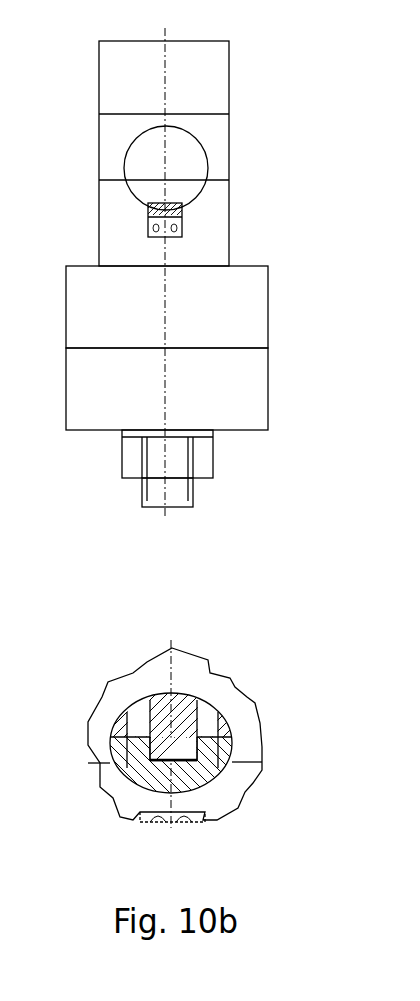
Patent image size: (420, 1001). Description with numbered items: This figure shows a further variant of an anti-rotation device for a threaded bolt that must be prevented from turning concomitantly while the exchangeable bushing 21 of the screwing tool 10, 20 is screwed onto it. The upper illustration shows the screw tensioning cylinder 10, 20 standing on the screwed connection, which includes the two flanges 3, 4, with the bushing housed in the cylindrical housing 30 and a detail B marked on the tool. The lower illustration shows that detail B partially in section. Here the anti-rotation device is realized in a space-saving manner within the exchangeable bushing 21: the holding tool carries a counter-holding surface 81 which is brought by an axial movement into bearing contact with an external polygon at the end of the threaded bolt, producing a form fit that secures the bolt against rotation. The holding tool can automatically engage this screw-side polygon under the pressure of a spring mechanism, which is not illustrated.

The screw tensioning cylinder 10 is at (237, 153).
The screw tensioning cylinder 20 is at (230, 193).
The detail B is at (205, 152).
The flange 3 is at (252, 318).
The flange 4 is at (252, 397).
The exchangeable bushing 21 is at (118, 735).
The cylindrical housing 30 is at (247, 715).
The counter-holding surface 81 is at (197, 745).